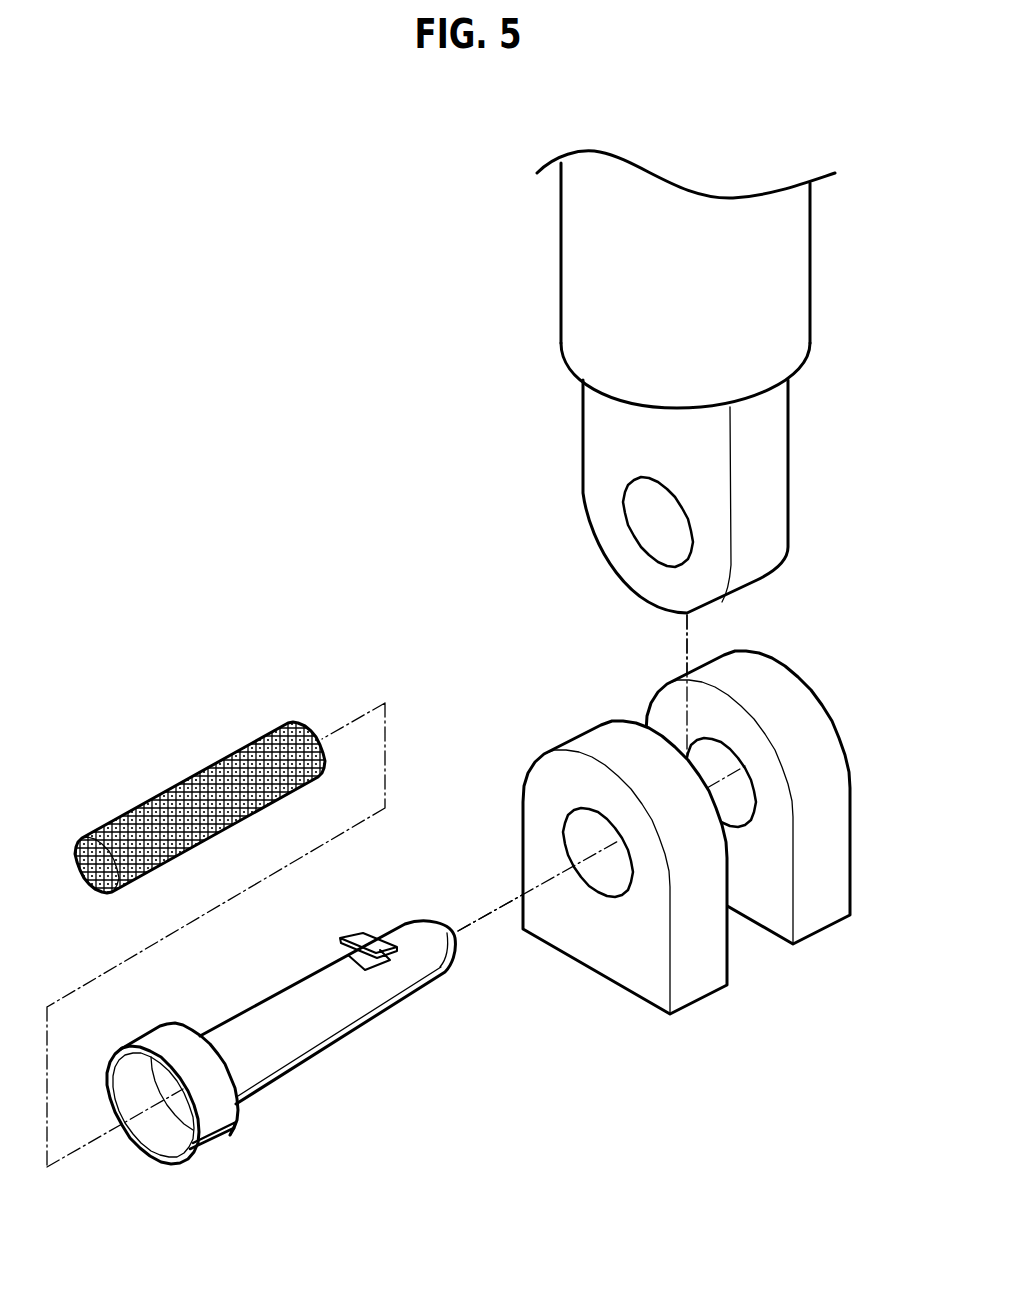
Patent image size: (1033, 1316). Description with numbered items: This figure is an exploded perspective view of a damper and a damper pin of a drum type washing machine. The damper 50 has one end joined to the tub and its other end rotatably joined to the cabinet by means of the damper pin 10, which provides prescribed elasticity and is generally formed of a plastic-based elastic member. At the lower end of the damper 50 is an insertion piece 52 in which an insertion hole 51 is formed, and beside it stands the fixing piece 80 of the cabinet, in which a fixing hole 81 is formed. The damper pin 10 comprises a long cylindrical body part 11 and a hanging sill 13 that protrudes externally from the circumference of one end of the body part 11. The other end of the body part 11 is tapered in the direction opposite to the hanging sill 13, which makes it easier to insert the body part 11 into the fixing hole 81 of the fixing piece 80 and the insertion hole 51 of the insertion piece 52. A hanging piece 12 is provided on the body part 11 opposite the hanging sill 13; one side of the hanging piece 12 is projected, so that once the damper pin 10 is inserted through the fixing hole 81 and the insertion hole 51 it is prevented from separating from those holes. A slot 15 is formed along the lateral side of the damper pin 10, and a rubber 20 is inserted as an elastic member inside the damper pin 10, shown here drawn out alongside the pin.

The damper pin 10 is at (292, 1013).
The body part 11 is at (257, 1013).
The hanging piece 12 is at (363, 933).
The hanging sill 13 is at (170, 1040).
The slot 15 is at (373, 1008).
The rubber 20 is at (213, 782).
The damper 50 is at (573, 287).
The insertion hole 51 is at (648, 523).
The insertion piece 52 is at (605, 441).
The fixing piece 80 is at (594, 750).
The fixing hole 81 is at (578, 837).